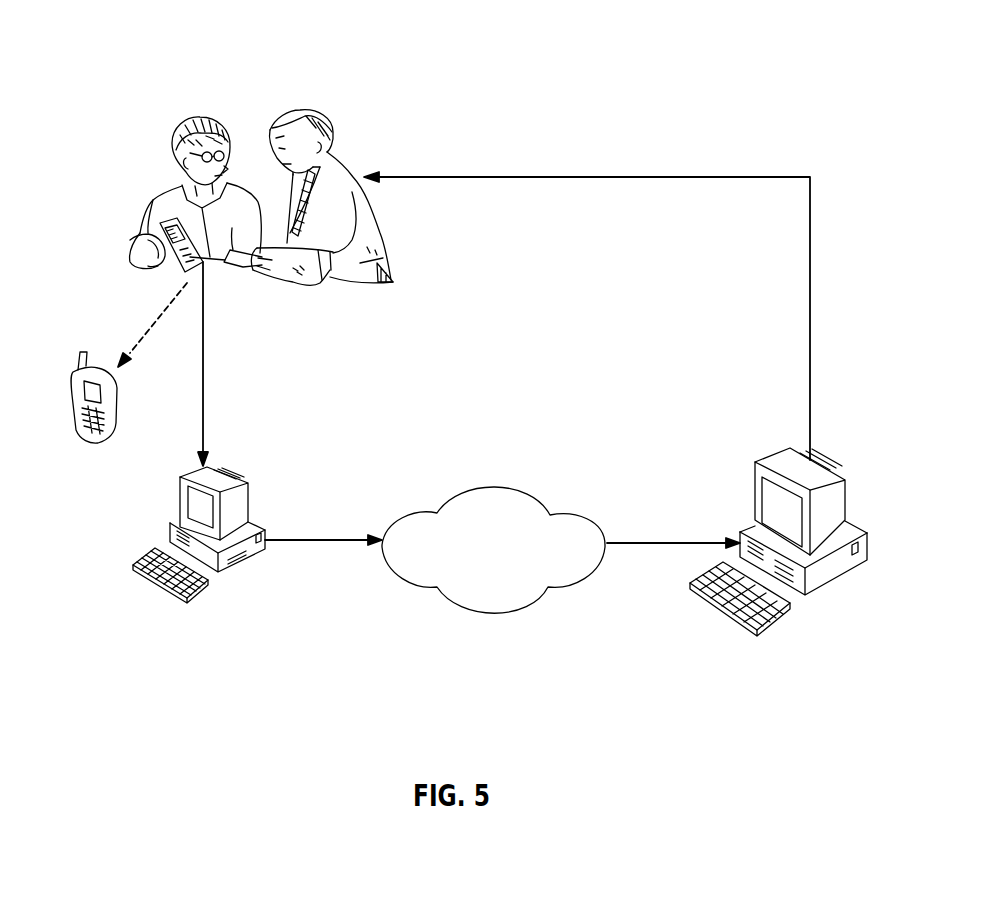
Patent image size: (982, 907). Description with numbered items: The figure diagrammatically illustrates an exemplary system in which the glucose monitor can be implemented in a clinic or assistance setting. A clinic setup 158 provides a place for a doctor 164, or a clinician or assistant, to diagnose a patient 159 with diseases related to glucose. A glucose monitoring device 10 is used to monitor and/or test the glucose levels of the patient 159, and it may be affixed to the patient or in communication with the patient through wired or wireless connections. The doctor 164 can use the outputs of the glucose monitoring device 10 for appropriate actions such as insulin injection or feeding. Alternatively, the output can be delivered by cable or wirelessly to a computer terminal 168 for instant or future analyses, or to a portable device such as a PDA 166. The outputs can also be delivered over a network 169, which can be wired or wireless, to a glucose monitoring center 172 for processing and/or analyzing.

The clinic setup 158 is at (252, 72).
The patient 159 is at (180, 127).
The doctor 164 is at (357, 155).
The glucose monitoring device 10 is at (162, 222).
The PDA 166 is at (84, 348).
The computer terminal 168 is at (241, 483).
The network 169 is at (504, 488).
The glucose monitoring center 172 is at (758, 460).